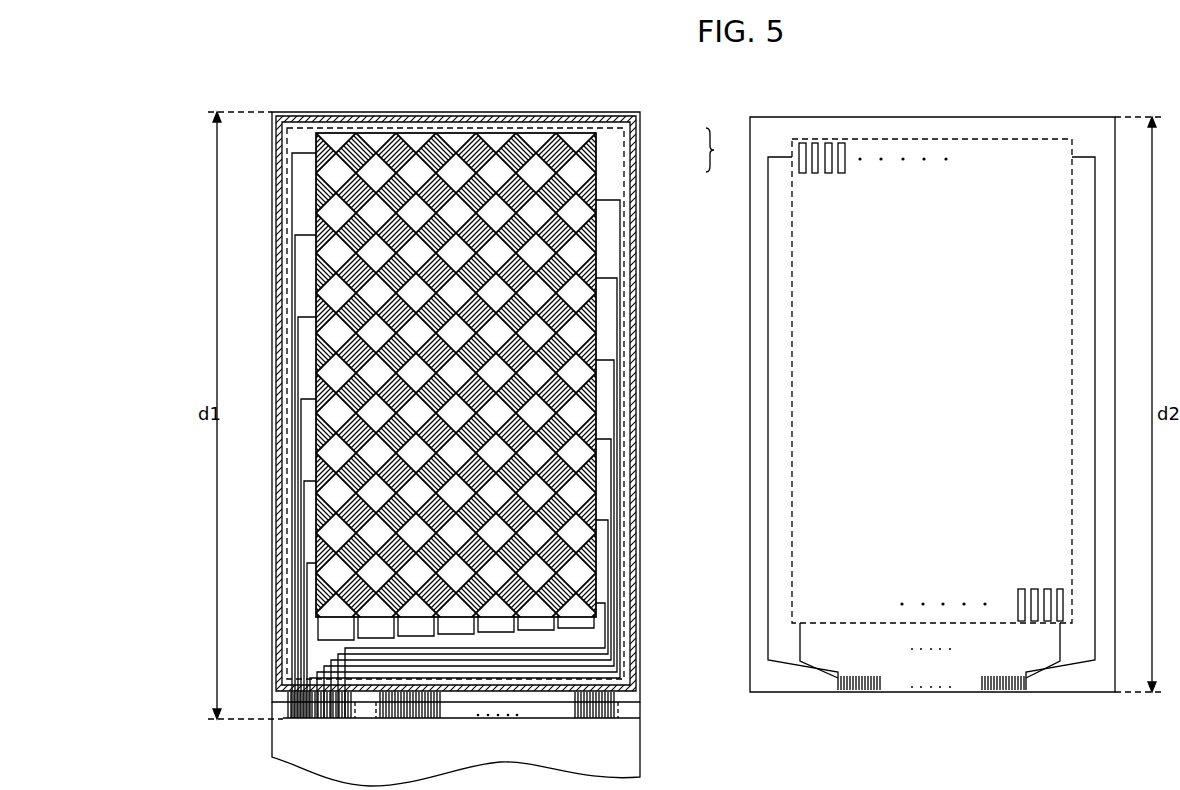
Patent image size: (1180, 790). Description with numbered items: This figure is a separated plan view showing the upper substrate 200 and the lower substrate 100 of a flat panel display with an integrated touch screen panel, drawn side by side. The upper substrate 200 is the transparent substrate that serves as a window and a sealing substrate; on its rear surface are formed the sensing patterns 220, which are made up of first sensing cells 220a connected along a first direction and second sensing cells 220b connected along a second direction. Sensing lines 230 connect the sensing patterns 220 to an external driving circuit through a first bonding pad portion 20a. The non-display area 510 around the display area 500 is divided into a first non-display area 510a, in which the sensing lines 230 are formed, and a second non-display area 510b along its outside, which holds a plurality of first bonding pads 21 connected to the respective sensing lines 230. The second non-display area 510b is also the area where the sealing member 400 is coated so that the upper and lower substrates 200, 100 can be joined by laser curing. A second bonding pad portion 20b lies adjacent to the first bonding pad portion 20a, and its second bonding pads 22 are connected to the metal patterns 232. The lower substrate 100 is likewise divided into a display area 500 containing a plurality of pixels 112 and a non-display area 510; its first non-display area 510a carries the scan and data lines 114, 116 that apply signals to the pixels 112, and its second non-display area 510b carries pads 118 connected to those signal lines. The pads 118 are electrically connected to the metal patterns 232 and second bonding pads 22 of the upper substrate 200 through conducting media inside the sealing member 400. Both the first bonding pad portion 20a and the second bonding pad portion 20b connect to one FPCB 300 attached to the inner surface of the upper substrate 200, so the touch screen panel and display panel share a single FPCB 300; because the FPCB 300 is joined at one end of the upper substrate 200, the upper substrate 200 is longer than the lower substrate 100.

The lower substrate 100 is at (926, 117).
The pixels 112 is at (828, 142).
The scan lines 114 is at (766, 652).
The data lines 116 is at (800, 652).
The pads 118 is at (831, 691).
The upper substrate 200 is at (531, 113).
The sensing patterns 220 is at (454, 331).
The first sensing cells 220a is at (354, 142).
The second sensing cells 220b is at (402, 77).
The sensing lines 230 is at (290, 207).
The sealing member 400 is at (637, 406).
The display area 500 is at (692, 334).
The non-display area 510 is at (729, 150).
The first non-display area 510a is at (612, 157).
The second non-display area 510b is at (630, 176).
The first bonding pads 21 is at (288, 710).
The second bonding pads 22 is at (446, 706).
The first bonding pad portion 20a is at (358, 717).
The second bonding pad portion 20b is at (614, 713).
The metal patterns 232 is at (614, 696).
The FPCB 300 is at (270, 744).